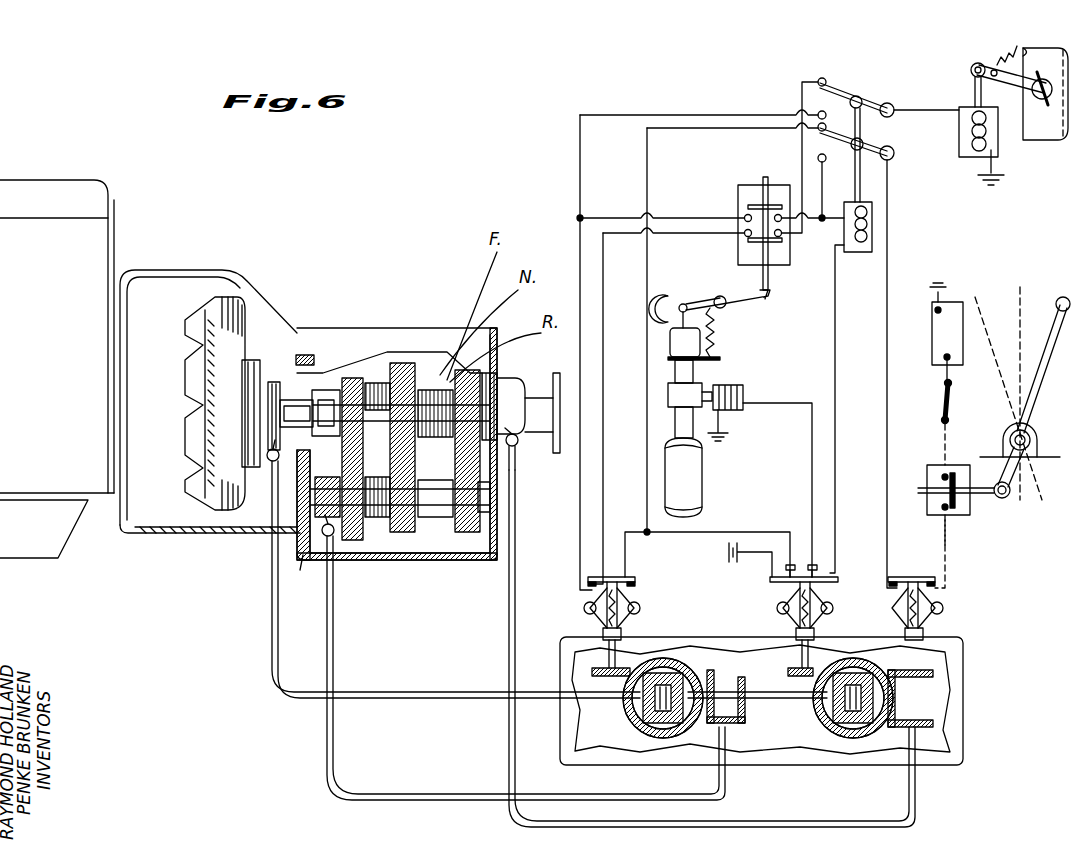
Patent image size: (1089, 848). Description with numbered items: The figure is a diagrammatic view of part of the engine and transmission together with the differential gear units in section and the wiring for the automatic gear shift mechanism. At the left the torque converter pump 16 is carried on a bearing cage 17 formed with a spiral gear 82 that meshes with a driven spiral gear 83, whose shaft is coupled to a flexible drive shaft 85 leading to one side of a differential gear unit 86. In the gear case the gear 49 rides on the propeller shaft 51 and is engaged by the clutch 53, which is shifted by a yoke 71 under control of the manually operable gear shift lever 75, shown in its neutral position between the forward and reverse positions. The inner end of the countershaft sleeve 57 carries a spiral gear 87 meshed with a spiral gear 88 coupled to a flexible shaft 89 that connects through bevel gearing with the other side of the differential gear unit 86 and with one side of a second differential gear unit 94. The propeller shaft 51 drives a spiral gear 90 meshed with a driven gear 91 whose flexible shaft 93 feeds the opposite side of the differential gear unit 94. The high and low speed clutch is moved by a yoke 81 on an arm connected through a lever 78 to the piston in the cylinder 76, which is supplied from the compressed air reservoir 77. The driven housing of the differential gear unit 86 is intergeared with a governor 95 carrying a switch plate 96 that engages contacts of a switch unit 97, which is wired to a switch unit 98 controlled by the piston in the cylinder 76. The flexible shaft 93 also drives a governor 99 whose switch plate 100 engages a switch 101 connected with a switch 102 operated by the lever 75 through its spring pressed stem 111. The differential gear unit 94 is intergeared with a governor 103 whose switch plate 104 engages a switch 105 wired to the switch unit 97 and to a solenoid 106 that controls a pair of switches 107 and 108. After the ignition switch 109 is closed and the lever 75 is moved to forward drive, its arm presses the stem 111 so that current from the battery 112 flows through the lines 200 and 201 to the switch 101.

The torque converter pump 16 is at (232, 332).
The bearing cage 17 is at (250, 360).
The spiral gear 82 is at (275, 382).
The gear 49 is at (399, 362).
The clutch 53 is at (430, 390).
The yoke 71 is at (468, 370).
The propeller shaft 51 is at (520, 398).
The spiral gear 90 is at (519, 440).
The driven gear 91 is at (515, 450).
The sleeve 57 is at (490, 492).
The flexible shaft 93 is at (516, 546).
The driven spiral gear 83 is at (268, 462).
The spiral gear 87 is at (303, 560).
The spiral gear 88 is at (334, 545).
The flexible drive shaft 85 is at (271, 650).
The flexible shaft 89 is at (334, 655).
The yoke 81 is at (660, 298).
The lever 78 is at (743, 306).
The cylinder 76 is at (668, 348).
The compressed air reservoir 77 is at (701, 471).
The switch unit 98 is at (738, 192).
The solenoid 106 is at (844, 250).
The switch 107 is at (876, 149).
The switch 108 is at (882, 106).
The battery 112 is at (931, 329).
The line 200 is at (944, 383).
The ignition switch 109 is at (955, 404).
The spring pressed stem 111 is at (927, 483).
The switch 102 is at (971, 504).
The gear shift lever 75 is at (1042, 394).
The line 201 is at (950, 541).
The switch plate 100 is at (898, 572).
The switch 101 is at (932, 592).
The governor 99 is at (944, 610).
The governor 103 is at (831, 613).
The switch plate 104 is at (815, 578).
The switch 105 is at (777, 609).
The switch plate 96 is at (612, 578).
The governor 95 is at (640, 608).
The switch unit 97 is at (584, 609).
The differential gear unit 86 is at (660, 655).
The differential gear unit 94 is at (845, 740).